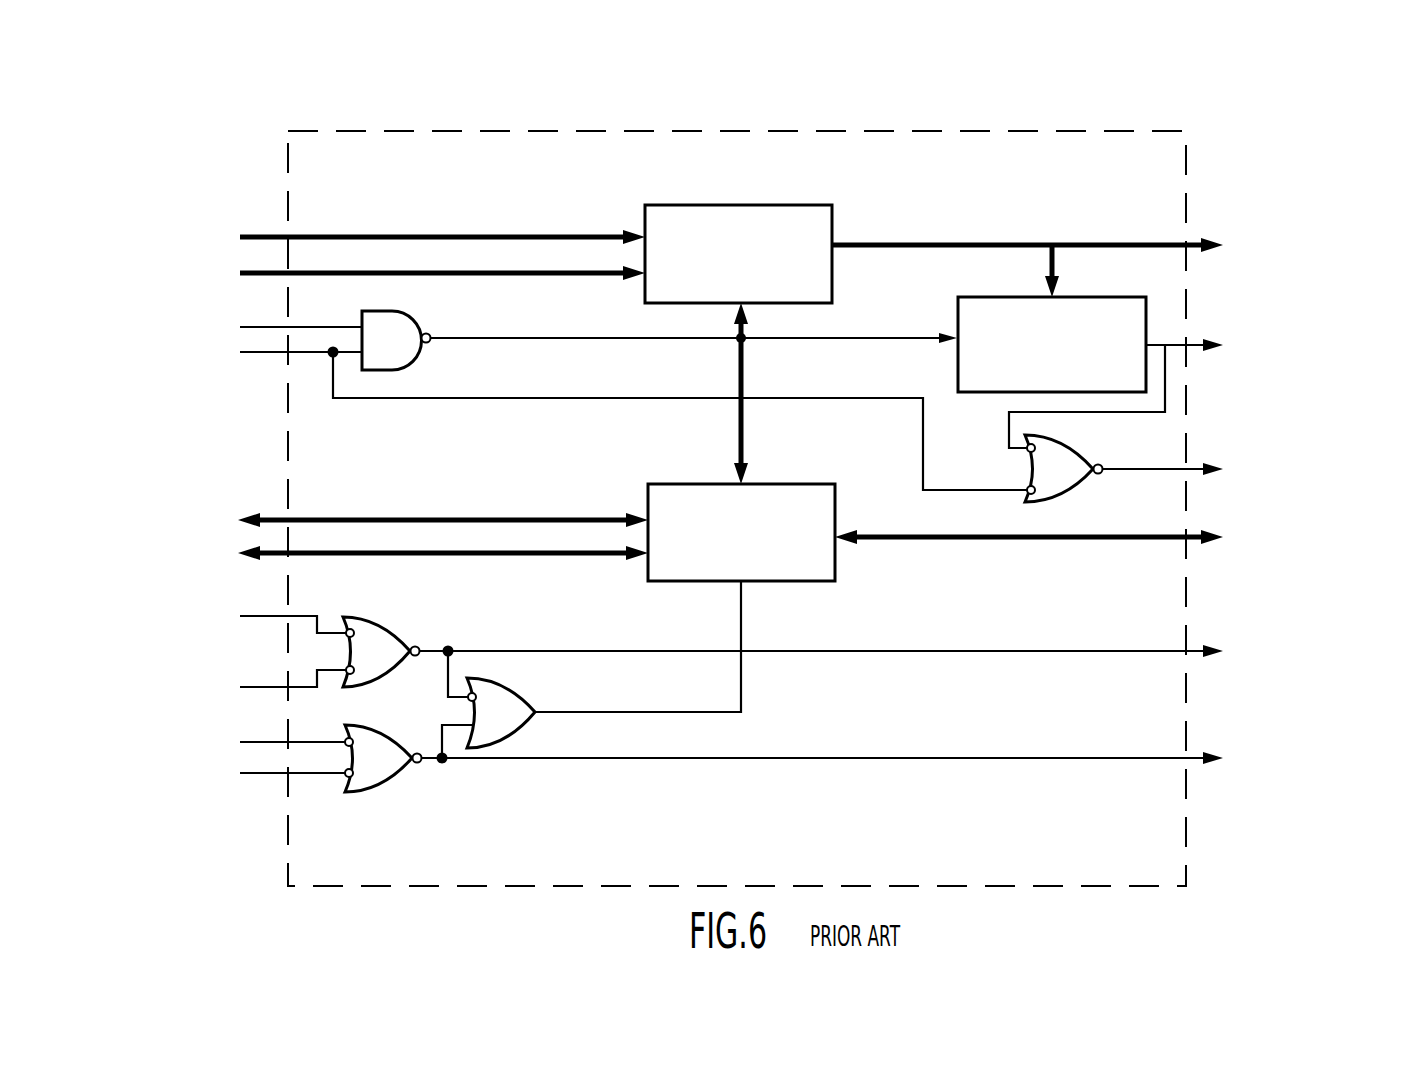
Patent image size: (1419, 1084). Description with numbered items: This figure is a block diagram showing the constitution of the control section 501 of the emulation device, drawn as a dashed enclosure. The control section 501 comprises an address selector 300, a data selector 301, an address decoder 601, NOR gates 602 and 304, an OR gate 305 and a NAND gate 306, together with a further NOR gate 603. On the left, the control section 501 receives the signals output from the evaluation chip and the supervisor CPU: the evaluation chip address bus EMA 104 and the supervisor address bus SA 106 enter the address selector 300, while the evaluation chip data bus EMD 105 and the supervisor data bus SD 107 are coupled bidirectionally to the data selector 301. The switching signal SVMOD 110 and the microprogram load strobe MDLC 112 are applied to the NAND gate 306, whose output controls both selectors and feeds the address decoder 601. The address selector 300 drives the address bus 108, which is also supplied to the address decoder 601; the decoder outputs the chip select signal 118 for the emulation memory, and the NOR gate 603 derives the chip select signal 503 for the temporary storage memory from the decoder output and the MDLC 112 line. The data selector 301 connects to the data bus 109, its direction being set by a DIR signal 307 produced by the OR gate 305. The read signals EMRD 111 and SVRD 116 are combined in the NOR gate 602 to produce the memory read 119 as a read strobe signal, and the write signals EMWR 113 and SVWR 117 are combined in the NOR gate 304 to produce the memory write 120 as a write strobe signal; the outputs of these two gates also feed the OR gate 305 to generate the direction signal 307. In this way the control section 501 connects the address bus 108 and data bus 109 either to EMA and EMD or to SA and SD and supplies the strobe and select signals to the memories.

The control section 501 is at (1186, 148).
The address selector 300 is at (745, 205).
The data selector 301 is at (716, 484).
The address decoder 601 is at (958, 318).
The NAND gate 306 is at (388, 311).
The NOR gate 603 is at (1050, 496).
The NOR gate 602 is at (370, 682).
The OR gate 305 is at (500, 742).
The NOR gate 304 is at (370, 790).
The direction signal DIR 307 is at (744, 632).
The external memory address signal EMA 104 is at (369, 239).
The address bus SA 106 is at (381, 274).
The SVMOD 110 is at (212, 323).
The MDLC 112 is at (553, 416).
The data bus EMD 105 is at (374, 517).
The data bus SD 107 is at (386, 555).
The EMRD 111 is at (210, 616).
The SVRD 116 is at (213, 685).
The EMWR 113 is at (211, 743).
The SVWR 117 is at (212, 775).
The address bus 108 is at (1121, 264).
The chip select signal 118 is at (1205, 389).
The chip select signal 503 is at (1187, 462).
The data bus 109 is at (1109, 537).
The memory read 119 is at (892, 660).
The memory write 120 is at (893, 759).